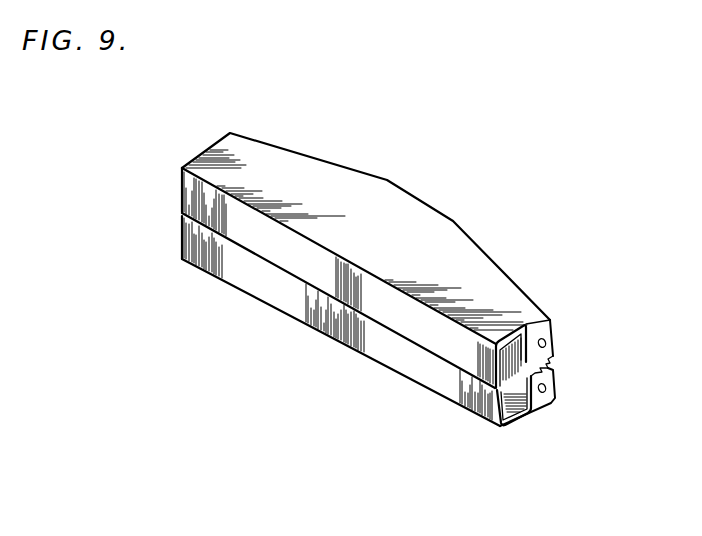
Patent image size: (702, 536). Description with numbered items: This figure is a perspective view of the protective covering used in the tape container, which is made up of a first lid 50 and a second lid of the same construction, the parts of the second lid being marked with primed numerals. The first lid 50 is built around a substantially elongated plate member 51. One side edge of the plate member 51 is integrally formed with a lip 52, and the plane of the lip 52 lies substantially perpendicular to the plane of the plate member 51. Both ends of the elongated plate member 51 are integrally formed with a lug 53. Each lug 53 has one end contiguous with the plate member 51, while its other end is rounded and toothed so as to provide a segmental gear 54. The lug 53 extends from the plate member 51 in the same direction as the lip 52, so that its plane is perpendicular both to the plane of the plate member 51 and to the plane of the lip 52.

The first lid 50 is at (428, 216).
The elongated plate member 51 is at (465, 250).
The lip 52 is at (305, 257).
The lug 53 is at (545, 328).
The segmental gear 54 is at (553, 356).